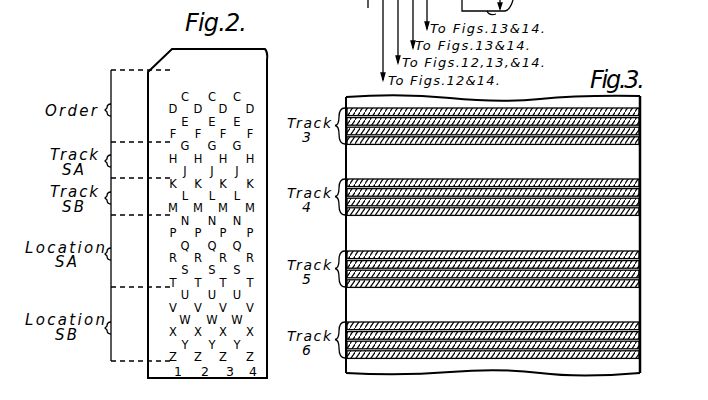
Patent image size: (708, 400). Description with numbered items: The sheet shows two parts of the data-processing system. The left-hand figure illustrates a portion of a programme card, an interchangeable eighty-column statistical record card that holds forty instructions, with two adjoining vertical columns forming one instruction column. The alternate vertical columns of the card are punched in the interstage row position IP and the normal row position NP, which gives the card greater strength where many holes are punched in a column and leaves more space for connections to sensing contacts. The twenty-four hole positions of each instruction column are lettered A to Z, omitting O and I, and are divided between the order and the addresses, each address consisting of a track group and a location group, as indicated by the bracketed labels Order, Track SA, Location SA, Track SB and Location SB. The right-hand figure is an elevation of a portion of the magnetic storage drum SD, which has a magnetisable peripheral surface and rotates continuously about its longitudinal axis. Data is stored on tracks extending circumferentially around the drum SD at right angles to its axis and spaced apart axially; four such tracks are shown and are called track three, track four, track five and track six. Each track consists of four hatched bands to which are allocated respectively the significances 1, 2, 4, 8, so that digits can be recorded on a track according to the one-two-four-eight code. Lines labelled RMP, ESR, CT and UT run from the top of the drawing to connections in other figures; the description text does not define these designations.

In FIG. 3, the band of significance one 1 is at (641, 110).
In FIG. 3, the band of significance two 2 is at (641, 120).
In FIG. 3, the band of significance four 4 is at (641, 131).
In FIG. 3, the band of significance eight 8 is at (641, 141).
In FIG. 2, the normal row position NP is at (246, 68).
In FIG. 2, the interstage row position IP is at (259, 84).
In FIG. 3, the storage drum SD is at (568, 373).
In FIG. 3, the RMP line RMP is at (412, 14).
In FIG. 3, the ESR line ESR is at (400, 22).
In FIG. 3, the CT line CT is at (392, 42).
In FIG. 3, the UT line UT is at (386, 63).